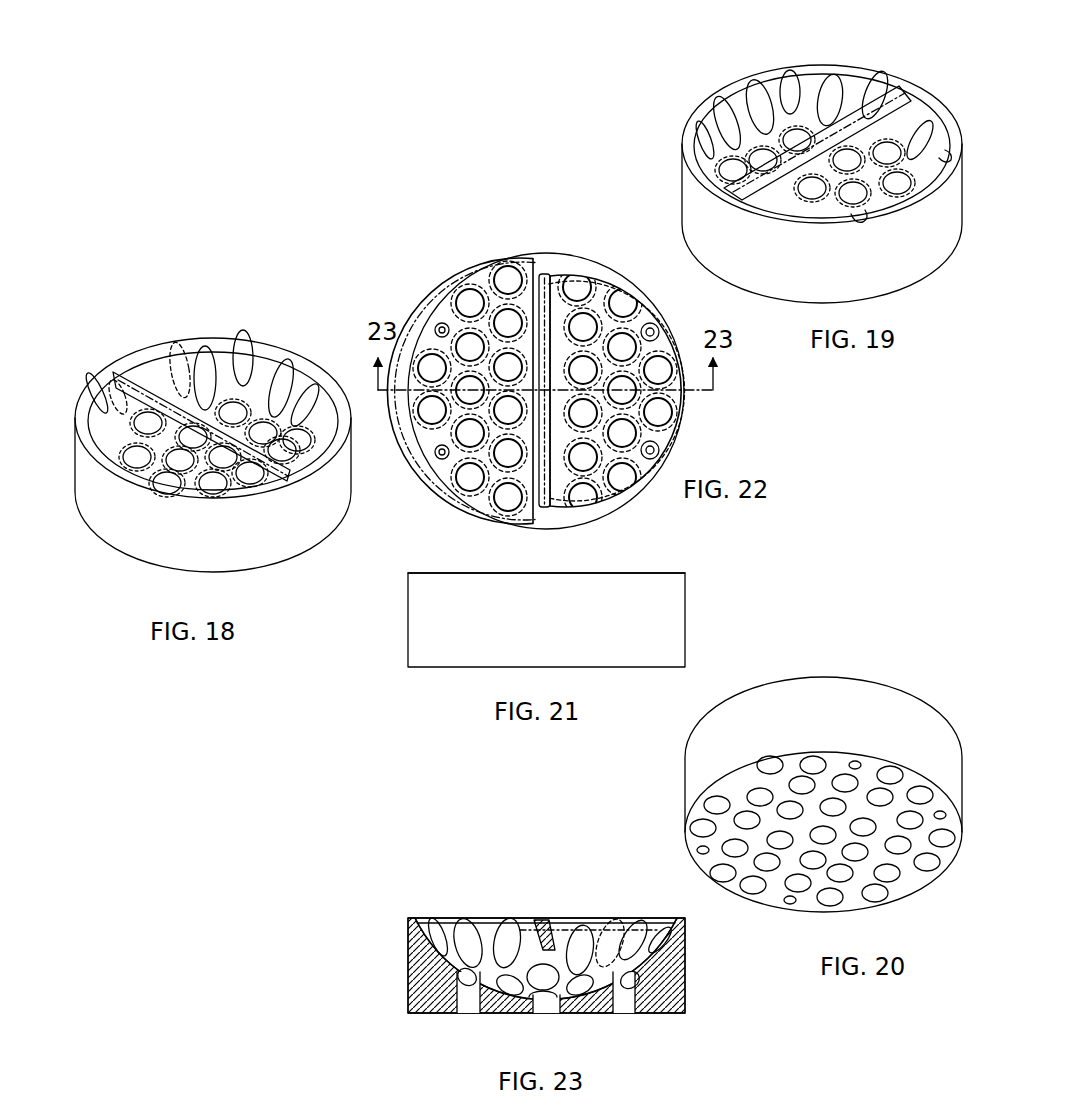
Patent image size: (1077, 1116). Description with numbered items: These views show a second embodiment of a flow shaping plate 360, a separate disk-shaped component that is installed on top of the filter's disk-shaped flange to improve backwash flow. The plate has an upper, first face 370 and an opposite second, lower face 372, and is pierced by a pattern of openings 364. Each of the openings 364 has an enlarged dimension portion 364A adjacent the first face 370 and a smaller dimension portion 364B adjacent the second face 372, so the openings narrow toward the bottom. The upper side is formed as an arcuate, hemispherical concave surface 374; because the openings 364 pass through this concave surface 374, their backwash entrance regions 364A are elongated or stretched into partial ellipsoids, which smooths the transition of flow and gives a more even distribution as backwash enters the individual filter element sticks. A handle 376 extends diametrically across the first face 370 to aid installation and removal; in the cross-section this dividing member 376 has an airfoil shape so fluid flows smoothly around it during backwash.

In FIG. 18, the flow shaping plate 360 is at (222, 305).
In FIG. 22, the flow shaping plate 360 is at (477, 255).
In FIG. 19, the flow shaping plate 360 is at (656, 162).
In FIG. 21, the flow shaping plate 360 is at (695, 617).
In FIG. 20, the flow shaping plate 360 is at (846, 665).
In FIG. 23, the flow shaping plate 360 is at (402, 966).
In FIG. 22, the openings 364 is at (622, 347).
In FIG. 19, the openings 364 is at (826, 95).
In FIG. 20, the openings 364 is at (705, 828).
In FIG. 23, the openings 364 is at (505, 945).
In FIG. 18, the enlarged dimension portions 364A is at (262, 392).
In FIG. 22, the enlarged dimension portions 364A is at (445, 362).
In FIG. 23, the enlarged dimension portions 364A is at (578, 948).
In FIG. 23, the smaller dimension portions 364B is at (462, 1006).
In FIG. 18, the first face 370 is at (290, 357).
In FIG. 22, the first face 370 is at (583, 270).
In FIG. 19, the first face 370 is at (920, 100).
In FIG. 21, the first face 370 is at (667, 573).
In FIG. 20, the first face 370 is at (912, 694).
In FIG. 23, the first face 370 is at (412, 916).
In FIG. 18, the second face 372 is at (290, 557).
In FIG. 19, the second face 372 is at (905, 287).
In FIG. 21, the second face 372 is at (650, 670).
In FIG. 20, the second face 372 is at (905, 890).
In FIG. 23, the second face 372 is at (660, 1020).
In FIG. 18, the concave surface 374 is at (178, 360).
In FIG. 22, the concave surface 374 is at (487, 492).
In FIG. 19, the concave surface 374 is at (735, 105).
In FIG. 23, the concave surface 374 is at (610, 955).
In FIG. 18, the handle 376 is at (140, 393).
In FIG. 22, the handle 376 is at (545, 492).
In FIG. 19, the handle 376 is at (855, 130).
In FIG. 23, the handle 376 is at (537, 918).